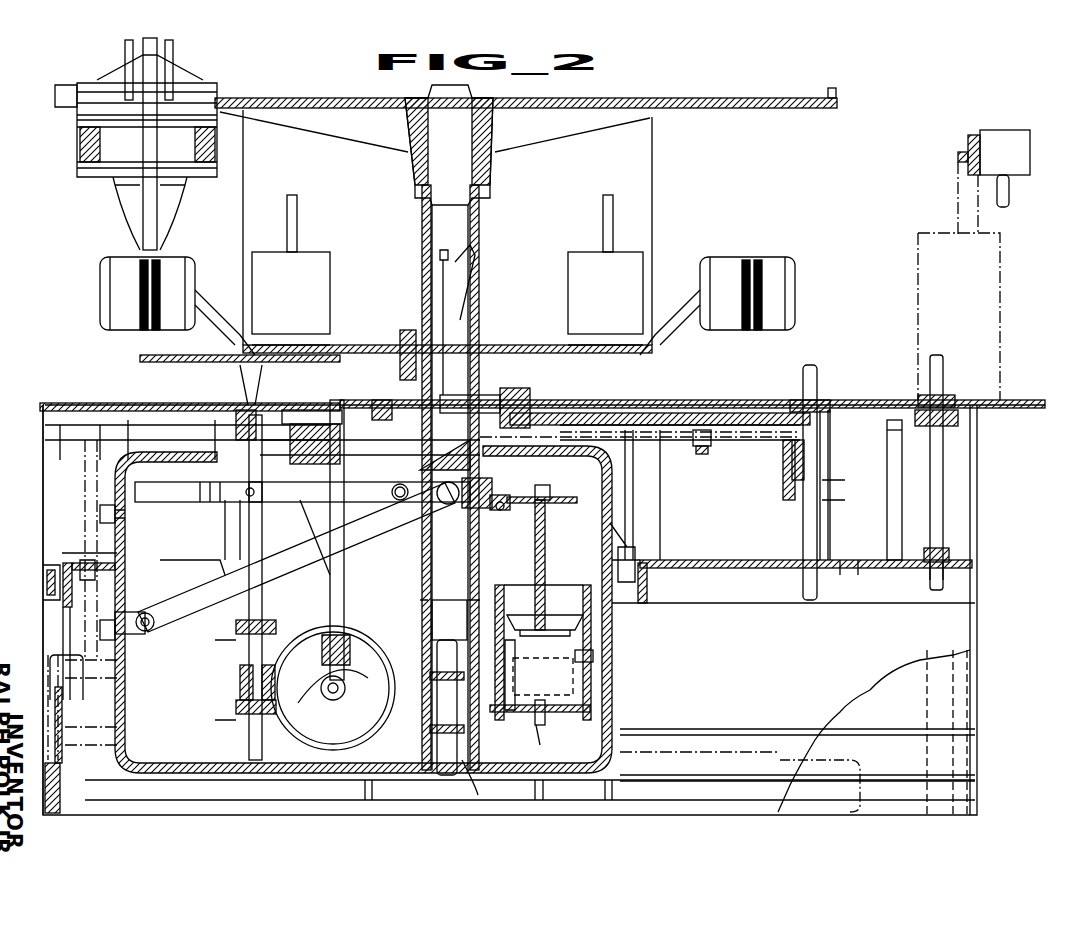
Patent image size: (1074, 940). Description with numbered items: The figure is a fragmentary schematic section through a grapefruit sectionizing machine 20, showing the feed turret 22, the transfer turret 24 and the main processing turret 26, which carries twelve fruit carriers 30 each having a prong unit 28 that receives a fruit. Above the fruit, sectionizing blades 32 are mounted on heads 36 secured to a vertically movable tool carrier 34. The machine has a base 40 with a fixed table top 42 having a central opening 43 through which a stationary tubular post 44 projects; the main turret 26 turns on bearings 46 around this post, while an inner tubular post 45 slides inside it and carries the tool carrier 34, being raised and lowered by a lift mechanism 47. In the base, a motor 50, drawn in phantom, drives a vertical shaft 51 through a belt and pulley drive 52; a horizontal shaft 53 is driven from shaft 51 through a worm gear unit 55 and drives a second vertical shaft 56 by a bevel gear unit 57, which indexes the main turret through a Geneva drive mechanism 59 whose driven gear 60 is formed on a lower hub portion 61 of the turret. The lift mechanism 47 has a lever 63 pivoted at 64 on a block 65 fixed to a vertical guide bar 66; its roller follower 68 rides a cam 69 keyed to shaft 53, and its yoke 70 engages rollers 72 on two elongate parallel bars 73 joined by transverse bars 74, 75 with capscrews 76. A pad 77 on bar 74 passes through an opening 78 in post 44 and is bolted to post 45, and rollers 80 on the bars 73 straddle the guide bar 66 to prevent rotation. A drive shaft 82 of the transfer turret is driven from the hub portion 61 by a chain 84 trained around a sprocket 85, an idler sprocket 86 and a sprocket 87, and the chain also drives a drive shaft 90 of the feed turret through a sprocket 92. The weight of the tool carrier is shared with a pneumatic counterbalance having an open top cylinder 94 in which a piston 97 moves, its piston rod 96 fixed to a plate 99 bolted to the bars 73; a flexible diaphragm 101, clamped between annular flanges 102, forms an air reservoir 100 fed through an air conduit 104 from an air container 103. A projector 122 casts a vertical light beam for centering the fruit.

The grapefruit sectionizing machine 20 is at (872, 150).
The feed turret 22 is at (942, 355).
The transfer turret 24 is at (812, 360).
The main processing turret 26 is at (542, 333).
The prong unit 28 is at (752, 272).
The fruit carrier 30 is at (808, 284).
The sectionizing blade 32 is at (170, 195).
The tool carrier 34 is at (682, 92).
The head 36 is at (80, 145).
The base 40 is at (32, 520).
The table top 42 is at (75, 404).
The central opening 43 is at (360, 408).
The stationary tubular post 44 is at (425, 385).
The inner tubular post 45 is at (438, 233).
The bearings 46 is at (420, 335).
The lift mechanism 47 is at (218, 578).
The motor 50 is at (45, 685).
The vertical shaft 51 is at (255, 525).
The belt and pulley drive 52 is at (198, 425).
The horizontal shaft 53 is at (340, 688).
The worm gear unit 55 is at (240, 688).
The second vertical shaft 56 is at (330, 520).
The bevel gear unit 57 is at (345, 660).
The Geneva drive mechanism 59 is at (285, 405).
The driven gear 60 is at (340, 420).
The lower hub portion 61 is at (490, 420).
The lever 63 is at (200, 612).
The pivot 64 is at (148, 632).
The block 65 is at (148, 610).
The vertical guide bar 66 is at (130, 540).
The roller follower 68 is at (350, 590).
The cam 69 is at (343, 727).
The yoke 70 is at (440, 535).
The roller 72 is at (455, 470).
The elongate parallel bar 73 is at (505, 505).
The transverse bar 74 is at (530, 492).
The transverse bar 75 is at (395, 486).
The capscrew 76 is at (510, 510).
The pad 77 is at (492, 480).
The opening 78 is at (470, 598).
The roller 80 is at (128, 490).
The drive shaft 82 is at (800, 512).
The chain 84 is at (748, 440).
The sprocket 85 is at (540, 450).
The idler sprocket 86 is at (695, 455).
The sprocket 87 is at (790, 440).
The drive shaft 90 is at (935, 478).
The sprocket 92 is at (960, 433).
The open top cylinder 94 is at (595, 628).
The piston rod 96 is at (548, 545).
The piston 97 is at (575, 595).
The plate 99 is at (550, 510).
The air reservoir 100 is at (528, 676).
The flexible diaphragm 101 is at (575, 648).
The annular flange 102 is at (596, 658).
The air container 103 is at (715, 740).
The air conduit 104 is at (528, 742).
The projector 122 is at (1000, 143).